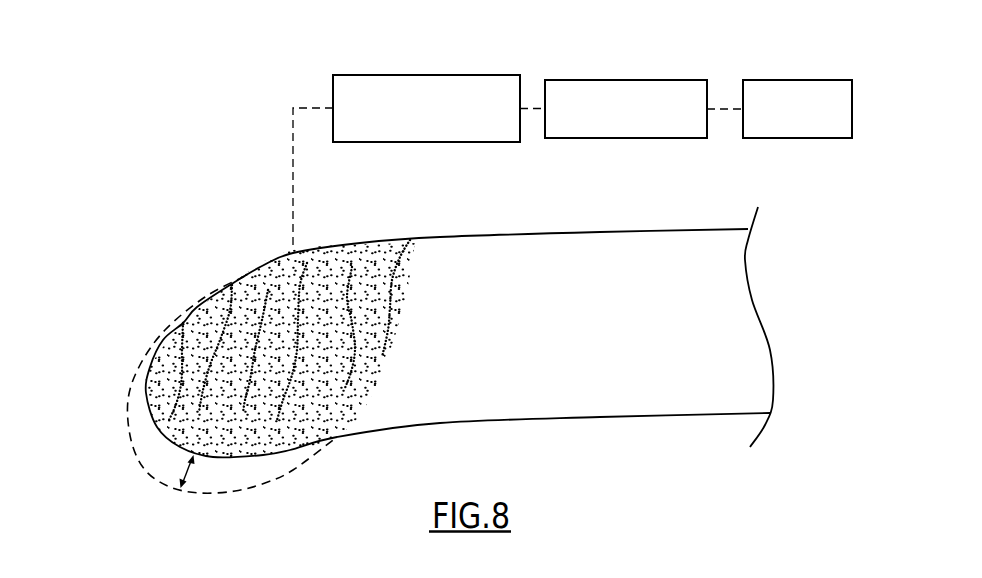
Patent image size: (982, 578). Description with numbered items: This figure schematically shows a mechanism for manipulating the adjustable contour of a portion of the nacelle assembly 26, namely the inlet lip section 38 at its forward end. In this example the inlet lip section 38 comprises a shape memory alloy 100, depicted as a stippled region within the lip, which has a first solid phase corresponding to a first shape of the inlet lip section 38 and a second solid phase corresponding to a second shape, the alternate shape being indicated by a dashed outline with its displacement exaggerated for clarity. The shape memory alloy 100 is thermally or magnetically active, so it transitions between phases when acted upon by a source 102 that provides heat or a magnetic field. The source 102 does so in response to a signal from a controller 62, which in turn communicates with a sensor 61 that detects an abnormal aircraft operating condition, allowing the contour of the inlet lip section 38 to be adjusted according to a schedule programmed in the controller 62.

The nacelle assembly 26 is at (645, 230).
The inlet lip section 38 is at (114, 373).
The shape memory alloy 100 is at (235, 298).
The source 102 is at (454, 75).
The controller 62 is at (638, 80).
The sensor 61 is at (815, 80).